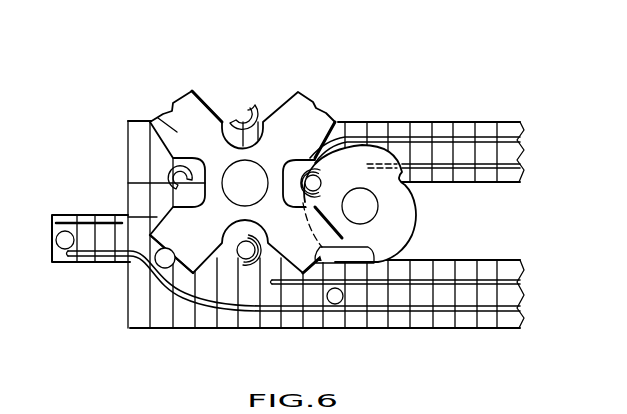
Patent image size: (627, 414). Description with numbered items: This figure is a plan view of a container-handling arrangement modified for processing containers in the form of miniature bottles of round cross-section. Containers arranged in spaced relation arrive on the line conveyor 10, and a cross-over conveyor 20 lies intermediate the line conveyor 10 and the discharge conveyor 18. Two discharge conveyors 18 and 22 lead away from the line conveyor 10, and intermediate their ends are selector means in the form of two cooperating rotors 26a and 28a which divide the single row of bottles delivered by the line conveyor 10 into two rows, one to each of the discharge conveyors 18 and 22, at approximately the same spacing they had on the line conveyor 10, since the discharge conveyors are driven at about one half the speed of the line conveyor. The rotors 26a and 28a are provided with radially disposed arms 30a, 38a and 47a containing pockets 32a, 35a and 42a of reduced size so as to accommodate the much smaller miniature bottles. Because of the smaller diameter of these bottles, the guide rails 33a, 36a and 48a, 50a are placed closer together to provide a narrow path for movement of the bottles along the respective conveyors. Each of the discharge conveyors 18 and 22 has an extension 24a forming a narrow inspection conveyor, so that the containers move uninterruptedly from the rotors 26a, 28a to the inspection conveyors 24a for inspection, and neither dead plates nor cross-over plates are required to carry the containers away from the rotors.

The line conveyor 10 is at (70, 215).
The discharge conveyor 18 is at (135, 157).
The cross-over conveyor 20 is at (135, 198).
The discharge conveyor 22 is at (166, 322).
The extension 24a is at (507, 150).
The rotor 26a is at (262, 166).
The rotor 28a is at (369, 207).
The radially disposed arm 30a is at (160, 115).
The pocket 32a is at (172, 103).
The guide rail 33a is at (228, 308).
The pocket 35a is at (253, 107).
The guide rail 36a is at (383, 278).
The radially disposed arm 38a is at (233, 105).
The pocket 42a is at (418, 205).
The radially disposed arm 47a is at (370, 157).
The guide rail 48a is at (398, 138).
The guide rail 50a is at (462, 167).